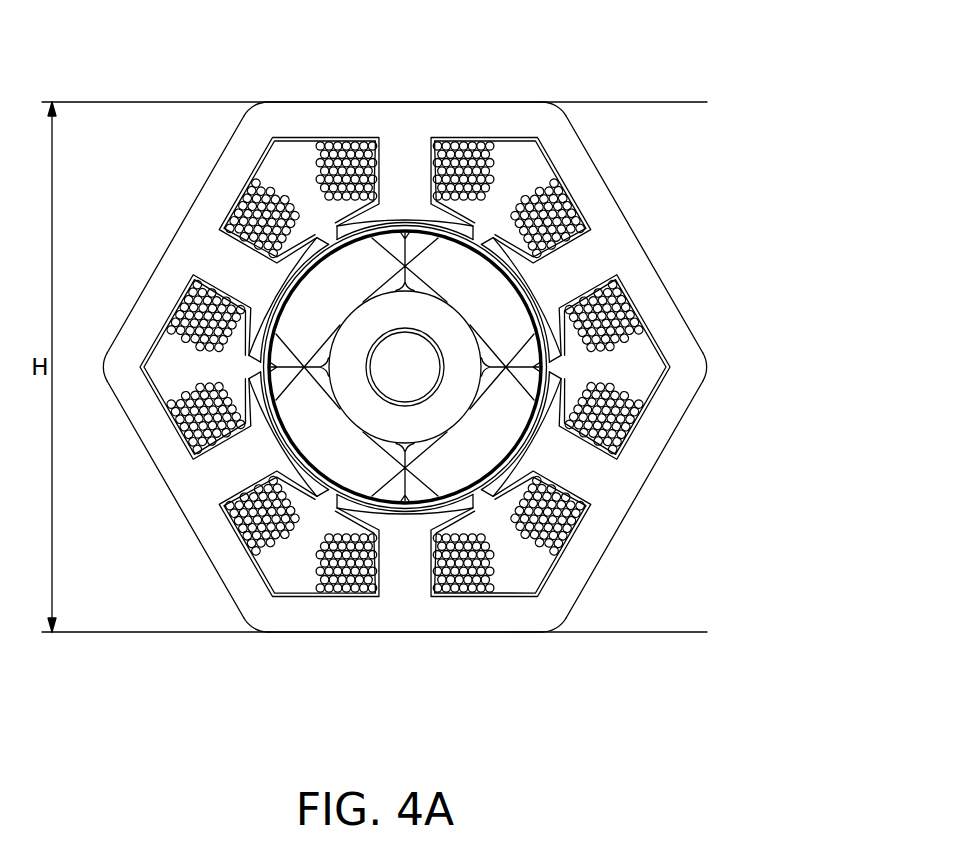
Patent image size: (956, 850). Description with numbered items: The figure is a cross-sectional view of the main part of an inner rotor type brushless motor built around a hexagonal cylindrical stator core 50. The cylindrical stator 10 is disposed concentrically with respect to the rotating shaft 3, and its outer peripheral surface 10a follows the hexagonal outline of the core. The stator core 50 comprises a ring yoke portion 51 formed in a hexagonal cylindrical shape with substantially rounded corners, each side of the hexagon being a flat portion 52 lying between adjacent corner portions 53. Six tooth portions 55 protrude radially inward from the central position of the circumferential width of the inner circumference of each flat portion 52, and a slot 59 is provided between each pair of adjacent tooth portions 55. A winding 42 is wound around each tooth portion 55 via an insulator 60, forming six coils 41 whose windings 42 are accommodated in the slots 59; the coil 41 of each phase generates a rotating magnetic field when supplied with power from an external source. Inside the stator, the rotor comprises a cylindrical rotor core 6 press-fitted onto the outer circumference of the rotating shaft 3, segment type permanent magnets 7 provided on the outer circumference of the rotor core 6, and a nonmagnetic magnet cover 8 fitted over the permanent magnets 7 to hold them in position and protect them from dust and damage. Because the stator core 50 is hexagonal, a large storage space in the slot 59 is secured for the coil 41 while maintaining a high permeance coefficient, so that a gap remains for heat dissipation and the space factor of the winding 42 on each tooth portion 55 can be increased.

The rotating shaft 3 is at (395, 387).
The rotor core 6 is at (358, 398).
The permanent magnet 7 is at (303, 300).
The magnet cover 8 is at (340, 490).
The stator 10 is at (400, 642).
The outer peripheral surface 10a is at (405, 367).
The coil 41 is at (405, 367).
The winding 42 is at (350, 150).
The stator core 50 is at (432, 101).
The ring yoke portion 51 is at (478, 115).
The flat portion 52 is at (512, 101).
The corner portion 53 is at (255, 103).
The tooth portion 55 is at (400, 158).
The slot 59 is at (290, 165).
The insulator 60 is at (302, 152).